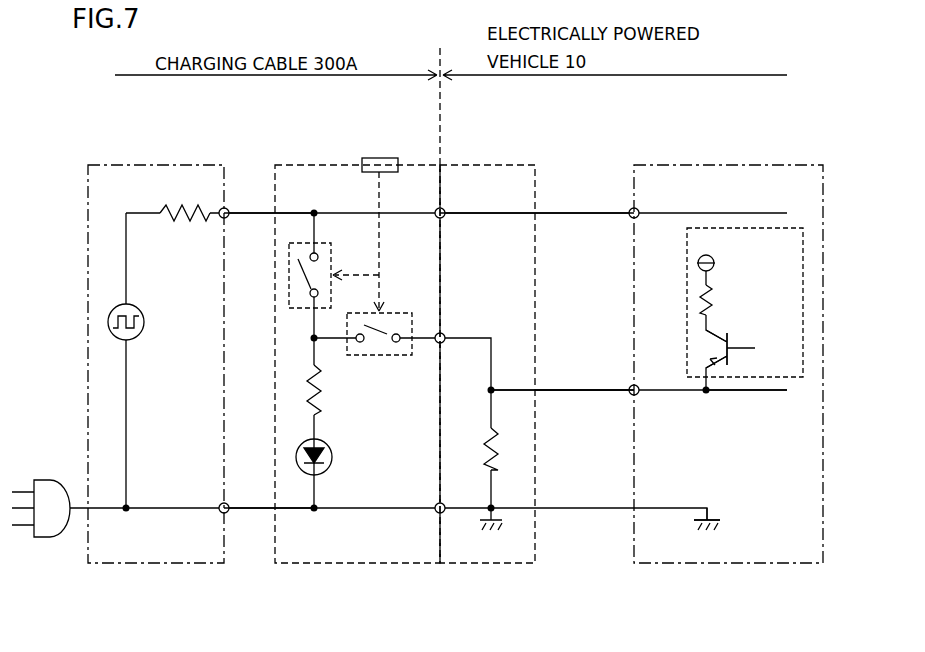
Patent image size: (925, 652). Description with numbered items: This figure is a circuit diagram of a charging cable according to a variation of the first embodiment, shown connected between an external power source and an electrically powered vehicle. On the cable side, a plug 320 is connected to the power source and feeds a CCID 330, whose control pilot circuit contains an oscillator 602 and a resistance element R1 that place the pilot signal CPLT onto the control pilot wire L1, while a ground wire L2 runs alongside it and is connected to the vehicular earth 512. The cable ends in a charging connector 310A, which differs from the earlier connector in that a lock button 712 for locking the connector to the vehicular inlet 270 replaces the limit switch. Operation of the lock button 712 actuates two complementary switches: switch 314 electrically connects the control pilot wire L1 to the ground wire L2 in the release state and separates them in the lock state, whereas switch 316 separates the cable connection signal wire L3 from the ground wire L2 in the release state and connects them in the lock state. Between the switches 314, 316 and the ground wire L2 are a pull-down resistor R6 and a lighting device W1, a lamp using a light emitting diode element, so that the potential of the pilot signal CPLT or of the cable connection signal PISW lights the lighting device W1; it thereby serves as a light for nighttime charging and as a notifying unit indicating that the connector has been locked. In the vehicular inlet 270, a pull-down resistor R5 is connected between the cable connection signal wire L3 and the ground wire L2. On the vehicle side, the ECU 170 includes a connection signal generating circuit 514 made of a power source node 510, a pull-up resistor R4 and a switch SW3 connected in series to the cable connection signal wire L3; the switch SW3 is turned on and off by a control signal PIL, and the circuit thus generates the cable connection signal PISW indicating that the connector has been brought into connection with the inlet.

The CCID 330 is at (162, 165).
The charging connector 310A is at (290, 165).
The vehicular inlet 270 is at (500, 165).
The ECU 170 is at (738, 165).
The lock button 712 is at (380, 158).
The plug 320 is at (46, 480).
The oscillator 602 is at (140, 334).
The resistance element R1 is at (186, 221).
The control pilot wire L1 is at (250, 213).
The ground wire L2 is at (252, 512).
The cable connection signal wire L3 is at (585, 393).
The switch 314 is at (331, 258).
The switch 316 is at (373, 356).
The pull-down resistor R6 is at (318, 408).
The lighting device W1 is at (332, 458).
The pull-down resistor R5 is at (498, 462).
The pilot signal CPLT is at (537, 202).
The cable connection signal PISW is at (562, 379).
The control signal PIL is at (745, 302).
The power source node 510 is at (713, 258).
The pull-up resistor R4 is at (712, 300).
The switch SW3 is at (705, 345).
The connection signal generating circuit 514 is at (780, 392).
The vehicular earth 512 is at (722, 533).